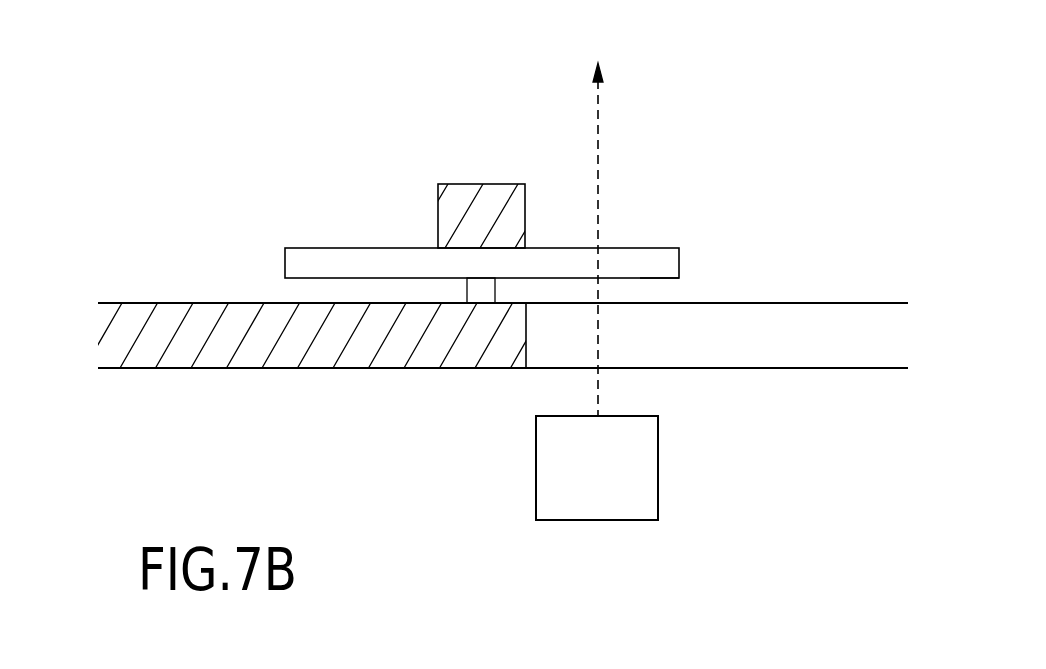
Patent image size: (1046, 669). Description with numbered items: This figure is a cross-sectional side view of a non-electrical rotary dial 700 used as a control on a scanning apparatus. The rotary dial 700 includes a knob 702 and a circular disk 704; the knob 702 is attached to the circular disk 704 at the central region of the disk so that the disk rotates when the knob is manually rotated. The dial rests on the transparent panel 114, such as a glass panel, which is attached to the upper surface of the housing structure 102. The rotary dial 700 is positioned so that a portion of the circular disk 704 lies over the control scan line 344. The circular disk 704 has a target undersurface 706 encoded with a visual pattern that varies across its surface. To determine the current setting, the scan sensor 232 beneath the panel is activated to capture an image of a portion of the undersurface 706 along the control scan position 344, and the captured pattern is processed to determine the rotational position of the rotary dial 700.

The housing structure 102 is at (143, 302).
The transparent panel 114 is at (823, 302).
The scan sensor 232 is at (658, 476).
The control scan line 344 is at (600, 220).
The non-electrical rotary dial 700 is at (494, 199).
The knob 702 is at (467, 183).
The circular disk 704 is at (315, 249).
The target undersurface 706 is at (663, 278).